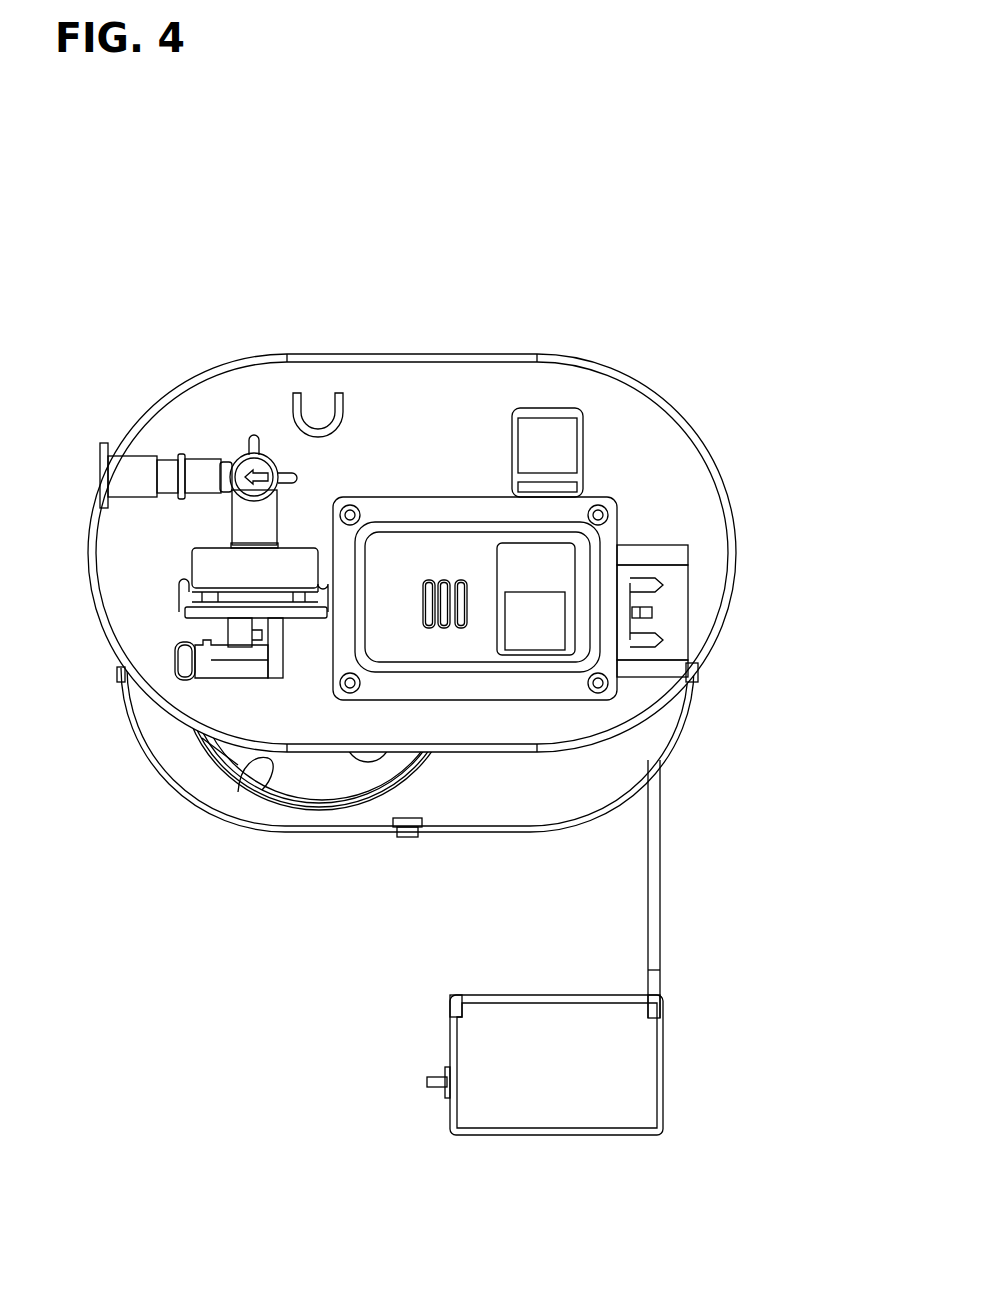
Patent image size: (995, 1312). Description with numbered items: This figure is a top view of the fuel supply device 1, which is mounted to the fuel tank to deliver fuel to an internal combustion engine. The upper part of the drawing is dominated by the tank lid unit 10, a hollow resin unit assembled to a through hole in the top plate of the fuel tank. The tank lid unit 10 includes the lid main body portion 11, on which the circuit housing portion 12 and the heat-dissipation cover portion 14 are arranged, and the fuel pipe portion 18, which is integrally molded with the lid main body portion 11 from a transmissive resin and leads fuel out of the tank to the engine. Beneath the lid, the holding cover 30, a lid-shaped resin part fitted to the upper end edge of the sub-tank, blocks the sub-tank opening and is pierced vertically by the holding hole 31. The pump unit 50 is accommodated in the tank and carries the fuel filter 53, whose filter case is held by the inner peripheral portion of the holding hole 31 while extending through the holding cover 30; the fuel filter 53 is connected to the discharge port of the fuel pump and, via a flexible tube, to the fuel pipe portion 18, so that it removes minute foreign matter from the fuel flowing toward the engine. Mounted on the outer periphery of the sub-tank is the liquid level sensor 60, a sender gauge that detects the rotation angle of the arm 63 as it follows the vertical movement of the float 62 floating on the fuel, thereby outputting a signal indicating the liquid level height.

The fuel supply device 1 is at (693, 345).
The tank lid unit 10 is at (688, 482).
The lid main body portion 11 is at (640, 425).
The circuit housing portion 12 is at (680, 557).
The heat-dissipation cover portion 14 is at (605, 532).
The fuel pipe portion 18 is at (212, 563).
The holding cover 30 is at (697, 712).
The holding hole 31 is at (267, 770).
The pump unit 50 is at (302, 808).
The fuel filter 53 is at (360, 776).
The liquid level sensor 60 is at (661, 837).
The float 62 is at (470, 1035).
The arm 63 is at (648, 924).